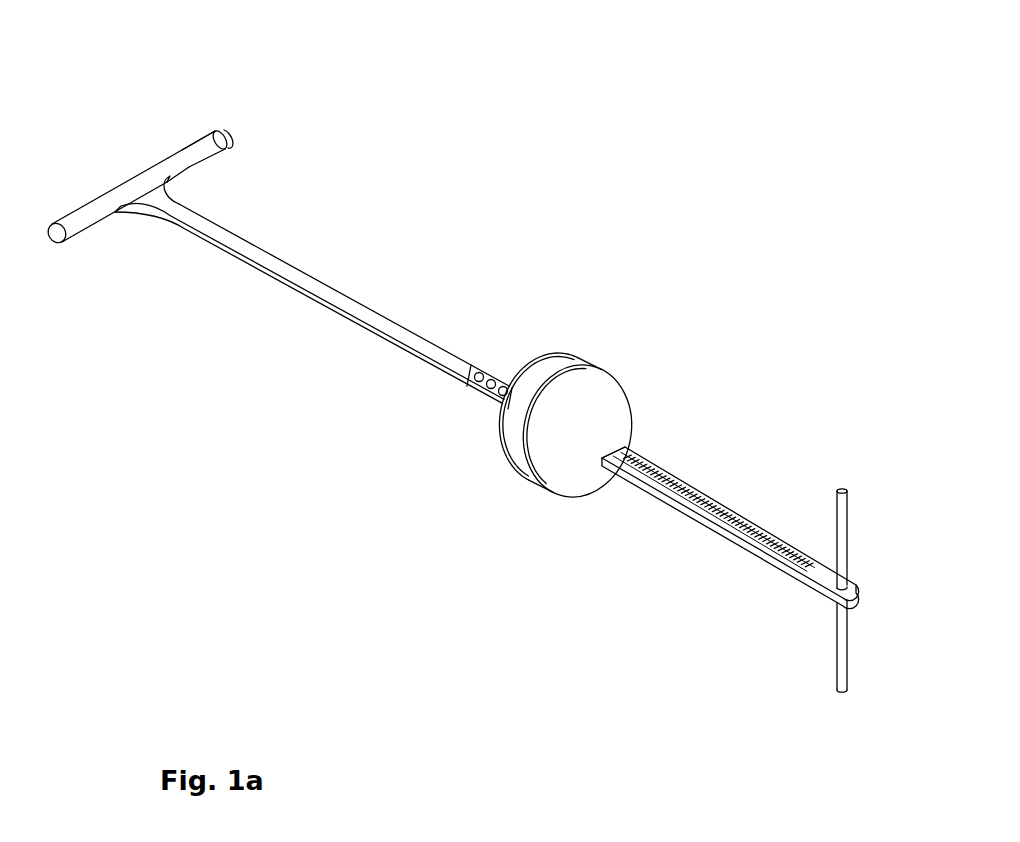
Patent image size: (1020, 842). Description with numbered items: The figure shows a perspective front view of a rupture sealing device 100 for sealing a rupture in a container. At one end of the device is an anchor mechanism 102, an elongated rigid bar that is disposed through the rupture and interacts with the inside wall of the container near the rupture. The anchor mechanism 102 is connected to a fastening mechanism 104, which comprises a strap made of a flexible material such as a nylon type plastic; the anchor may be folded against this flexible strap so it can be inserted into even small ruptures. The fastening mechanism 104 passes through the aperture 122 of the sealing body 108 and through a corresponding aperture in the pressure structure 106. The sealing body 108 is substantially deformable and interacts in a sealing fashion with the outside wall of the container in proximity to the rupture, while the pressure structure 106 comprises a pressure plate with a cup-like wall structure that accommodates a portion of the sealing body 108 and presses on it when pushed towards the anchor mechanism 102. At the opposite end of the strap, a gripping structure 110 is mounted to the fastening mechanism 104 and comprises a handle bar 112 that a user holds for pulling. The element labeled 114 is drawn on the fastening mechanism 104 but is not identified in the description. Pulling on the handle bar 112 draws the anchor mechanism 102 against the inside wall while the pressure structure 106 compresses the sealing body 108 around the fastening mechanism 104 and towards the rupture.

The rupture sealing device 100 is at (704, 91).
The anchor mechanism 102 is at (838, 508).
The fastening mechanism 104 is at (672, 478).
The pressure structure 106 is at (553, 373).
The sealing body 108 is at (555, 480).
The gripping structure 110 is at (347, 302).
The handle bar 112 is at (185, 145).
The detent balls 114 is at (482, 399).
The aperture 122 is at (612, 454).